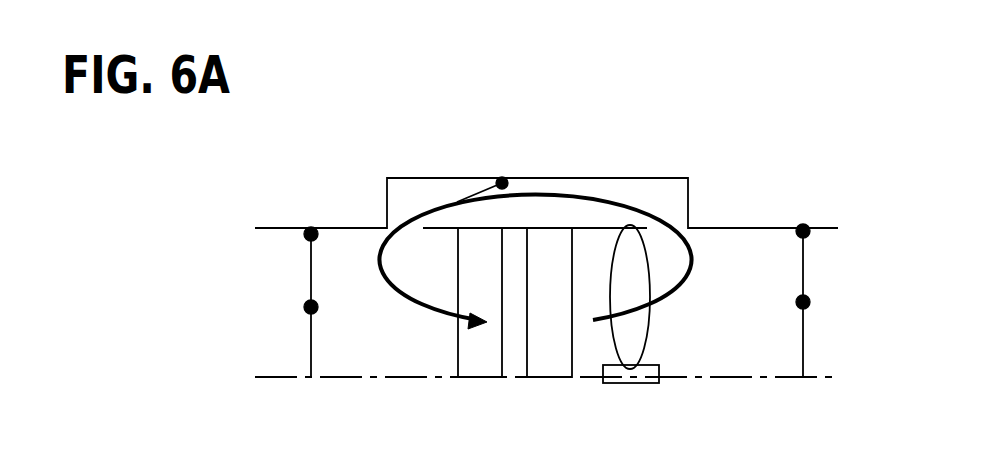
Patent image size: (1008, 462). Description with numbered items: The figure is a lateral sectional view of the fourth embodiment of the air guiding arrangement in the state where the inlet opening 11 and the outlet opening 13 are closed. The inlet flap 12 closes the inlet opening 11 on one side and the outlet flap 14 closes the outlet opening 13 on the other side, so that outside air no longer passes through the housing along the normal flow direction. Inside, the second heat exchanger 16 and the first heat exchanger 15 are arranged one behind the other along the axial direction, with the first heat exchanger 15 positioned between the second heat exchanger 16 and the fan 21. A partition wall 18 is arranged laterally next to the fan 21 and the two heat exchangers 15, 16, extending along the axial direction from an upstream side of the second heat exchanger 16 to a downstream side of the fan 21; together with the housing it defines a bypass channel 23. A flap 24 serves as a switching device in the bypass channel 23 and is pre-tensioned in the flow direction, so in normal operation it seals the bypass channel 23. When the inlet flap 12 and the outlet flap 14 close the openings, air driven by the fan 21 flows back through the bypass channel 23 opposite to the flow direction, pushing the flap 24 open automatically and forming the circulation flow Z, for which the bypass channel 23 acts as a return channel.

The inlet opening 11 is at (343, 342).
The inlet flap 12 is at (310, 267).
The outlet opening 13 is at (785, 348).
The outlet flap 14 is at (805, 262).
The first heat exchanger 15 is at (553, 360).
The second heat exchanger 16 is at (482, 360).
The partition wall 18 is at (585, 226).
The fan 21 is at (640, 330).
The bypass channel 23 is at (420, 198).
The flap 24 is at (473, 192).
The circulation flow Z is at (620, 203).